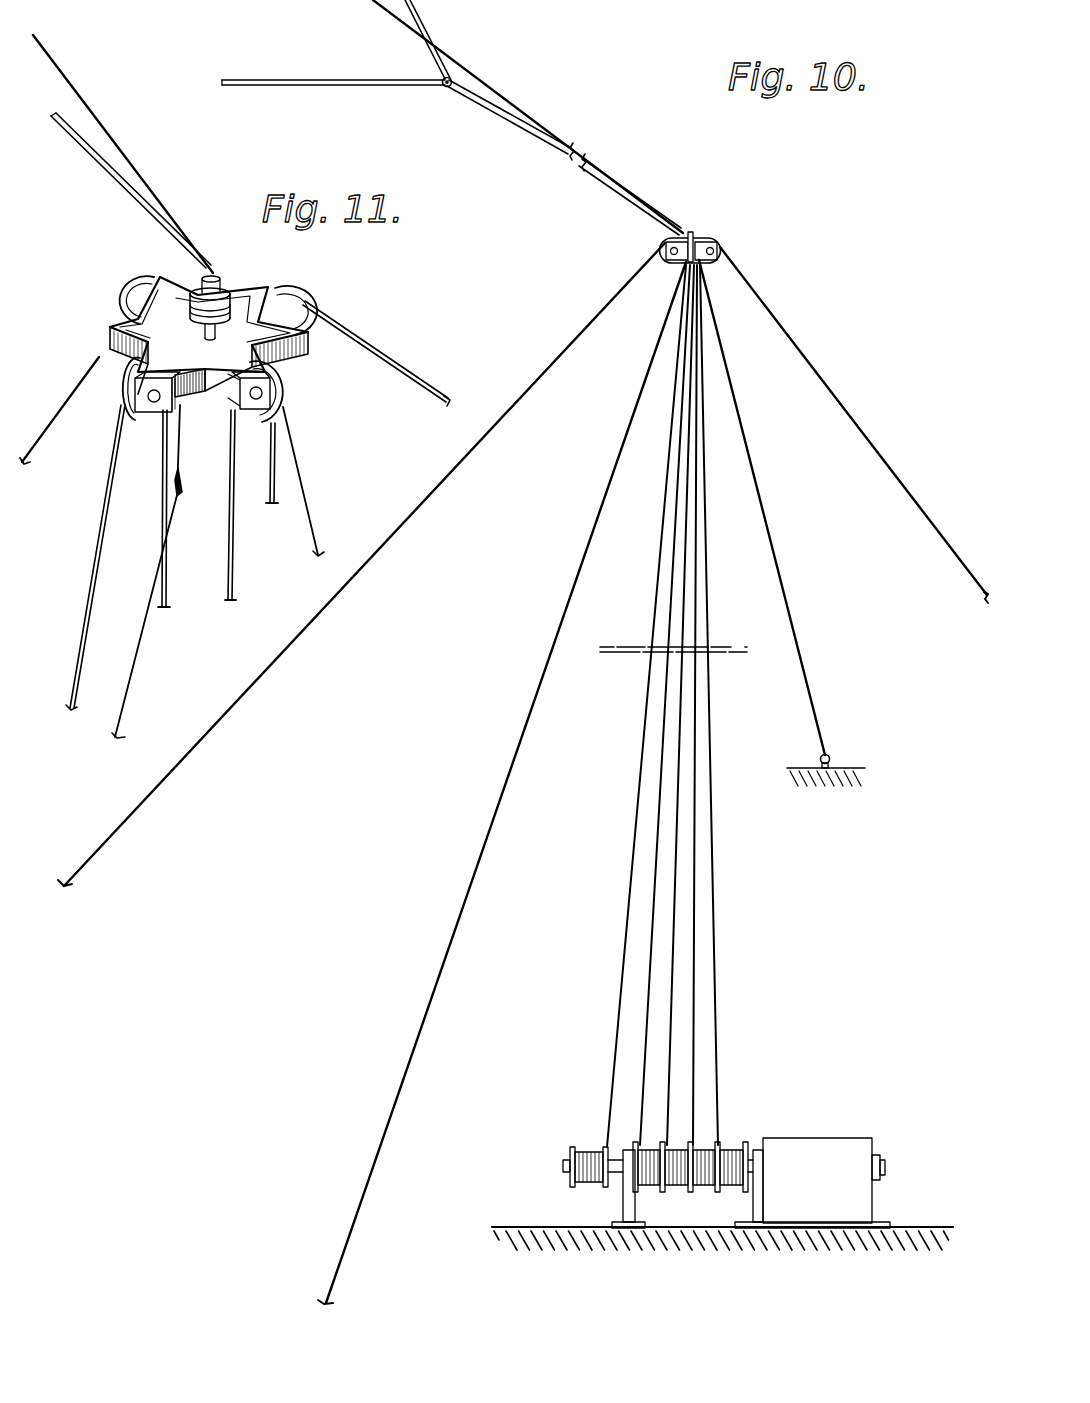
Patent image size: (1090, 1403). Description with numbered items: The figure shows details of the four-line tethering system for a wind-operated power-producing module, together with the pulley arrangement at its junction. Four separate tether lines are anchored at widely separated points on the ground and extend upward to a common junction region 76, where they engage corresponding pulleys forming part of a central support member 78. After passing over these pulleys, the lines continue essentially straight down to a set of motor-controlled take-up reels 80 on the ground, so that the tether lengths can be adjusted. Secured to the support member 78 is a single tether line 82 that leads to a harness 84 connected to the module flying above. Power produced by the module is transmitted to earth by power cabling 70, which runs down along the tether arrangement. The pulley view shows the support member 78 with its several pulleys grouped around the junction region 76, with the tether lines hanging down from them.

In FIG. 10, the power cabling 70 is at (628, 762).
In FIG. 10, the common junction region 76 is at (728, 214).
In FIG. 11, the common junction region 76 is at (267, 272).
In FIG. 11, the central support member 78 is at (300, 378).
In FIG. 10, the motor-controlled take-up reels 80 is at (755, 1115).
In FIG. 10, the single tether line 82 is at (525, 135).
In FIG. 11, the single tether line 82 is at (110, 177).
In FIG. 10, the harness 84 is at (438, 96).